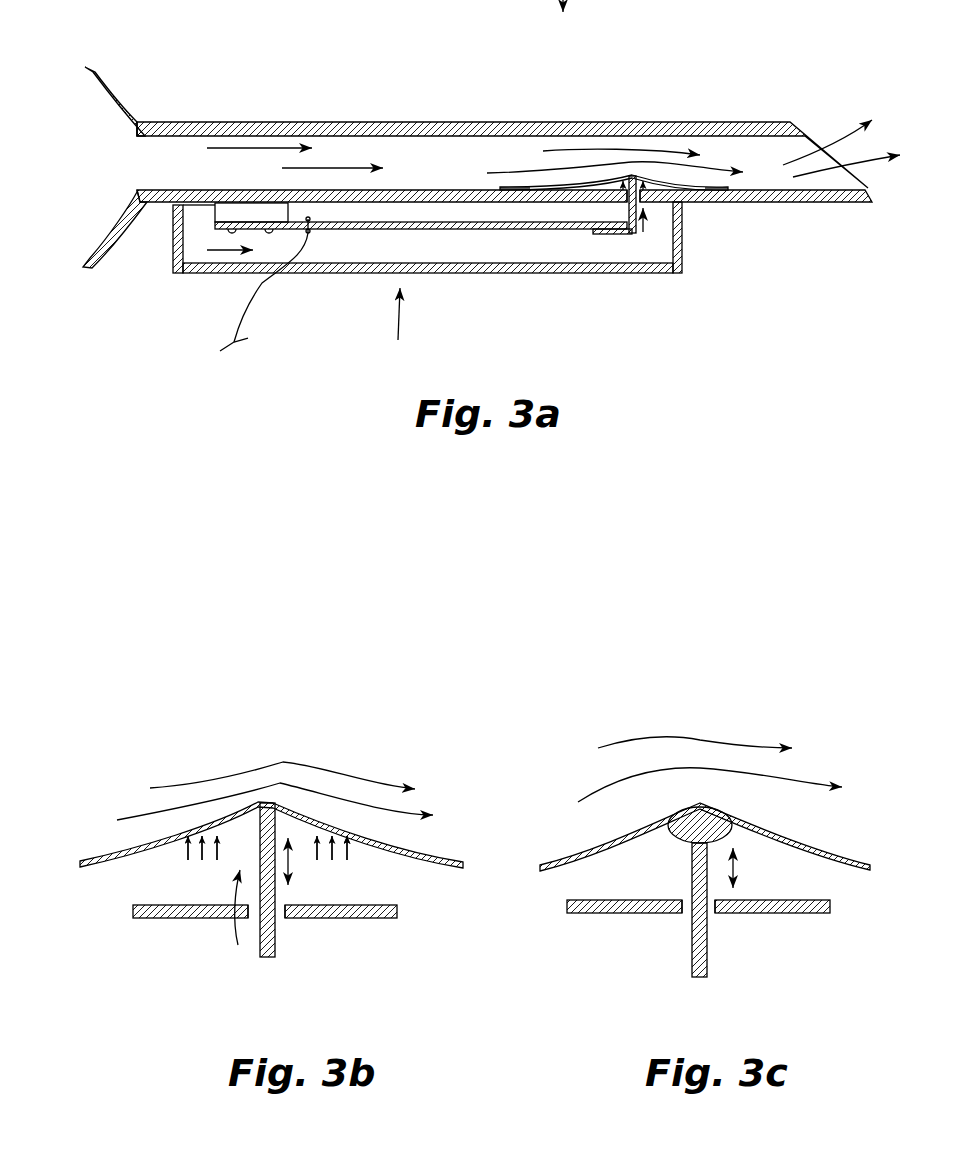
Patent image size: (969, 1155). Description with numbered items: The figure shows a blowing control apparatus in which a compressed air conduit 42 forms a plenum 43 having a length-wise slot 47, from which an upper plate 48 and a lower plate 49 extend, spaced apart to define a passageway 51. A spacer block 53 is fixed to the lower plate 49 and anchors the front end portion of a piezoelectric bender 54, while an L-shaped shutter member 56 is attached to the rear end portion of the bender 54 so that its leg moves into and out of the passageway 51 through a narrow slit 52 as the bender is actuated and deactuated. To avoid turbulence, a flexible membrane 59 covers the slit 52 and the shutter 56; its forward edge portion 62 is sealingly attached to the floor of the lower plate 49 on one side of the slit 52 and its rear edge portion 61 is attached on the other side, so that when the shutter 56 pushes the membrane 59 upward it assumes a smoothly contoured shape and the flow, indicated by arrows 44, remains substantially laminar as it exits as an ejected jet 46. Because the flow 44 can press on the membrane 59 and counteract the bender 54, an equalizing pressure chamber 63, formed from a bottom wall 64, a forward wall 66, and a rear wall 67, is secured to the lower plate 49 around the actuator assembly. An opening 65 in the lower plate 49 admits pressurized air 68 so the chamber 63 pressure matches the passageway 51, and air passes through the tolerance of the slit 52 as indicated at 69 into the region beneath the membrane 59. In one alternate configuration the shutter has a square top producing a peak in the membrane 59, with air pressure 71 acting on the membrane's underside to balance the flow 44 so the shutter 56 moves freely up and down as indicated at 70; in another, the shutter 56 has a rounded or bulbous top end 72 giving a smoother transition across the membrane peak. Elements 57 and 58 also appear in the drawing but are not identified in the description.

In FIG. 3A, the compressed air conduit 42 is at (108, 78).
In FIG. 3A, the plenum 43 is at (103, 123).
In FIG. 3A, the air flow arrows 44 is at (272, 148).
In FIG. 3B, the air flow arrows 44 is at (212, 800).
In FIG. 3C, the air flow arrows 44 is at (690, 767).
In FIG. 3A, the ejected jet 46 is at (868, 188).
In FIG. 3A, the length-wise slot 47 is at (137, 189).
In FIG. 3A, the upper plate 48 is at (368, 128).
In FIG. 3A, the lower plate 49 is at (438, 197).
In FIG. 3B, the lower plate 49 is at (150, 913).
In FIG. 3C, the lower plate 49 is at (590, 915).
In FIG. 3A, the passageway 51 is at (480, 150).
In FIG. 3A, the narrow slit 52 is at (627, 198).
In FIG. 3B, the narrow slit 52 is at (233, 917).
In FIG. 3C, the narrow slit 52 is at (685, 910).
In FIG. 3A, the spacer block 53 is at (255, 213).
In FIG. 3A, the piezoelectric bender 54 is at (490, 229).
In FIG. 3A, the L-shaped shutter member 56 is at (637, 258).
In FIG. 3B, the L-shaped shutter member 56 is at (275, 943).
In FIG. 3C, the L-shaped shutter member 56 is at (708, 950).
In FIG. 3A, the cable 57 is at (268, 285).
In FIG. 3A, the cable connector 58 is at (245, 295).
In FIG. 3A, the flexible membrane 59 is at (615, 177).
In FIG. 3B, the flexible membrane 59 is at (425, 850).
In FIG. 3C, the flexible membrane 59 is at (815, 843).
In FIG. 3A, the rear edge portion 61 is at (715, 183).
In FIG. 3A, the forward edge portion 62 is at (511, 187).
In FIG. 3A, the equalizing pressure chamber 63 is at (399, 328).
In FIG. 3A, the bottom wall 64 is at (337, 275).
In FIG. 3A, the opening 65 is at (207, 250).
In FIG. 3A, the forward wall 66 is at (170, 240).
In FIG. 3A, the rear wall 67 is at (682, 218).
In FIG. 3A, the pressurized air 68 is at (207, 258).
In FIG. 3A, the air flow through slit 69 is at (600, 250).
In FIG. 3B, the air flow through slit 69 is at (257, 920).
In FIG. 3B, the shutter movement 70 is at (293, 863).
In FIG. 3B, the air pressure 71 is at (192, 867).
In FIG. 3C, the rounded or bulbous top end 72 is at (677, 817).